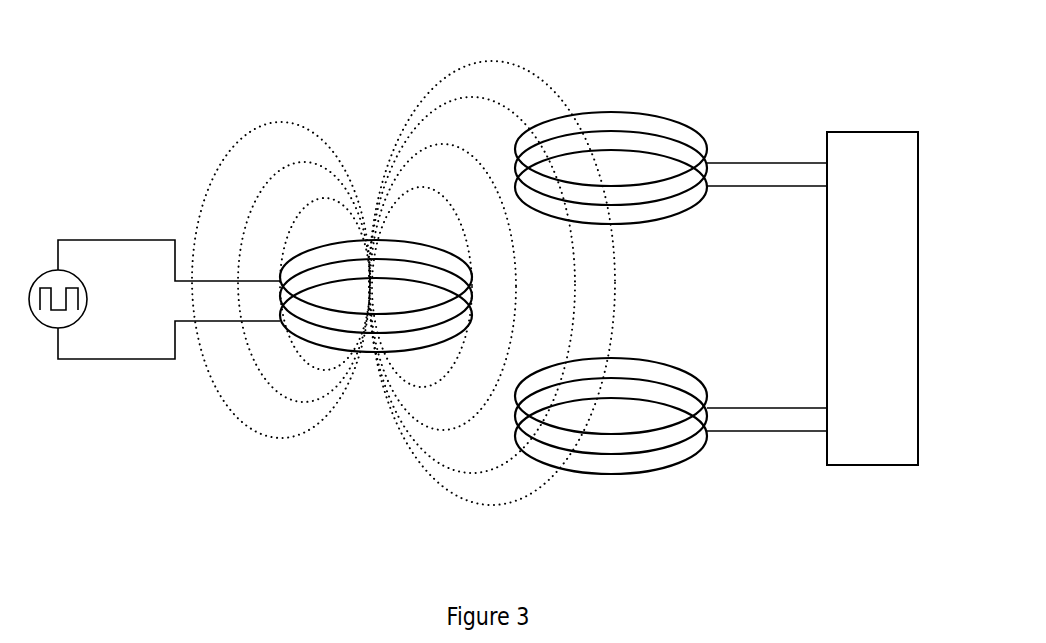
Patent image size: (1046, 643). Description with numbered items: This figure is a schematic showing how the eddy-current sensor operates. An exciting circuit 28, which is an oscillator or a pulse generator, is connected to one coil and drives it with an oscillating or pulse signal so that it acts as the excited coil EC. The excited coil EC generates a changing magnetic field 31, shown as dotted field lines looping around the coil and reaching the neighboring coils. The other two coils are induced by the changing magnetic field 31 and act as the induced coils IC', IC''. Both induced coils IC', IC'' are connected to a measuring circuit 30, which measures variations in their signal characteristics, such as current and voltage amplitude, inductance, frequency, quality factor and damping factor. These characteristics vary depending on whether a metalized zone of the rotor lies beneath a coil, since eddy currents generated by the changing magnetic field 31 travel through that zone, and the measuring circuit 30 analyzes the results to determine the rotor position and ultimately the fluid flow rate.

The exciting circuit 28 is at (43, 333).
The measuring circuit 30 is at (865, 165).
The changing magnetic field 31 is at (283, 168).
The excited coil EC is at (404, 334).
The induced coil IC' is at (671, 129).
The induced coil IC'' is at (671, 434).